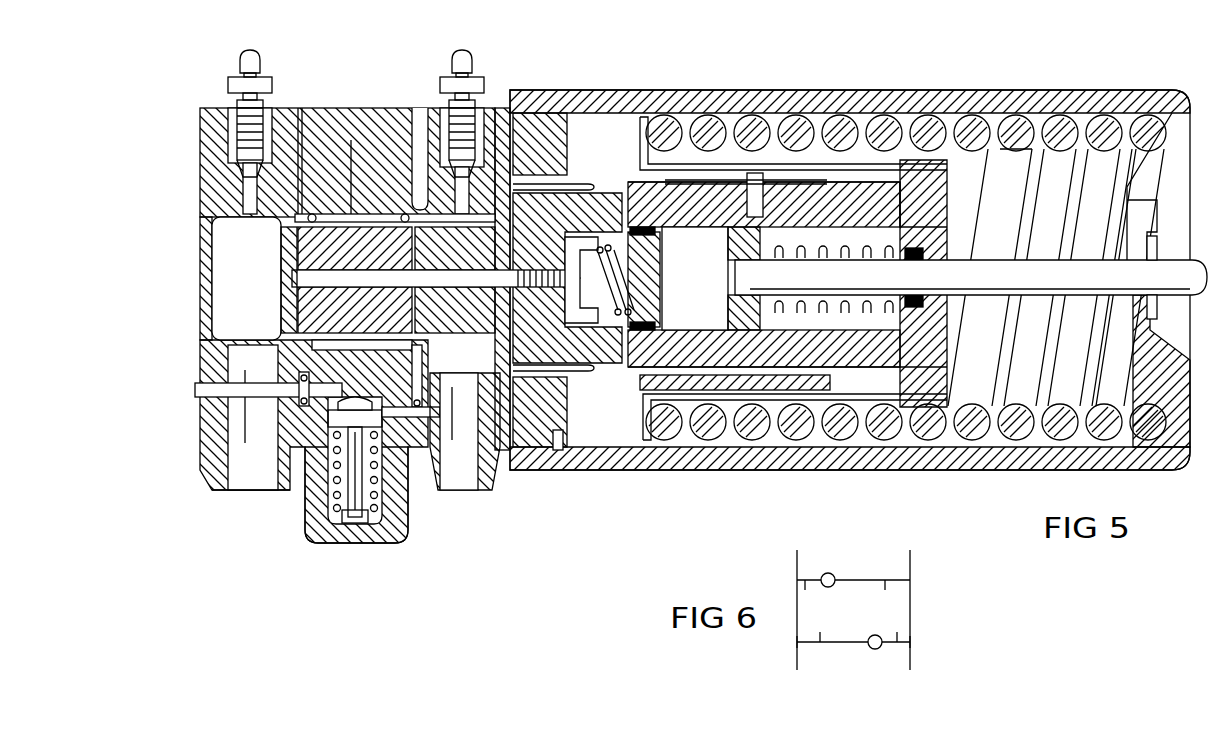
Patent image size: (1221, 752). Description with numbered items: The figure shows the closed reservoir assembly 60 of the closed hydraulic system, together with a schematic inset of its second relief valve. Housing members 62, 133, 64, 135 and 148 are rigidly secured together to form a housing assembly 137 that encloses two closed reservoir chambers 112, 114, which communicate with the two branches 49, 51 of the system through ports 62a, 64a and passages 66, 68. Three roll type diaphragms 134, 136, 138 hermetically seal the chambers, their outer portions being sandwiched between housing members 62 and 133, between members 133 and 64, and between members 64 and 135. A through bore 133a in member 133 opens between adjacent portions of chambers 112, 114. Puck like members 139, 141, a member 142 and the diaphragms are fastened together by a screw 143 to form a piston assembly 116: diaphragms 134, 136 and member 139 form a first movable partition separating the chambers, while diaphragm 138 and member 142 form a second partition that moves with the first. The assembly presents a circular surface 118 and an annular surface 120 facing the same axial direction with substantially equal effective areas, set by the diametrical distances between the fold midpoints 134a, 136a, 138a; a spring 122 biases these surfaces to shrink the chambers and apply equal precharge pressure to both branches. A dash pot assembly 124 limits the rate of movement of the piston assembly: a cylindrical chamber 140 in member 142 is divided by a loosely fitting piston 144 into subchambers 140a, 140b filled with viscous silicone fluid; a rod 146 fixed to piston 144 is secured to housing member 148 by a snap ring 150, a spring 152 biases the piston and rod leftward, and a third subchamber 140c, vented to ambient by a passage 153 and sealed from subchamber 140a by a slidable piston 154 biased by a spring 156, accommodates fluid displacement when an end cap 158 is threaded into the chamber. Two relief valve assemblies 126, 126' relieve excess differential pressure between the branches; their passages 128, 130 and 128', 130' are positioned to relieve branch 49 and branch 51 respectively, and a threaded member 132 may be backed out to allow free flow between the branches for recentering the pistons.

In FIG. 5, the closed reservoir assembly 60 is at (632, 70).
In FIG. 5, the housing member 62 is at (217, 130).
In FIG. 5, the port 62a is at (230, 490).
In FIG. 5, the housing member 64 is at (422, 108).
In FIG. 5, the port 64a is at (485, 490).
In FIG. 5, the conduit or passage 66 is at (258, 490).
In FIG. 5, the conduit or passage 68 is at (462, 490).
In FIG. 5, the closed reservoir chamber 112 is at (203, 193).
In FIG. 5, the closed reservoir chamber 114 is at (438, 77).
In FIG. 5, the piston assembly 116 is at (265, 304).
In FIG. 5, the circular surface 118 is at (280, 257).
In FIG. 5, the annular surface 120 is at (495, 346).
In FIG. 5, the spring 122 is at (967, 116).
In FIG. 5, the dash pot assembly 124 is at (888, 380).
In FIG. 5, the relief valve assembly 126 is at (341, 512).
In FIG. 6, the relief valve assembly 126 is at (872, 668).
In FIG. 6, the relief valve assembly 126' is at (838, 551).
In FIG. 5, the passage 128 is at (250, 389).
In FIG. 6, the passage 128 is at (819, 618).
In FIG. 6, the passage 128' is at (924, 552).
In FIG. 5, the passage 130 is at (417, 472).
In FIG. 6, the passage 130 is at (882, 610).
In FIG. 6, the passage 130' is at (779, 552).
In FIG. 5, the threaded member 132 is at (385, 543).
In FIG. 5, the housing member 133 is at (330, 112).
In FIG. 5, the through bore 133a is at (342, 338).
In FIG. 5, the roll type diaphragm 134 is at (298, 222).
In FIG. 5, the fold midpoint 134a is at (351, 140).
In FIG. 5, the housing member 135 is at (532, 110).
In FIG. 5, the roll type diaphragm 136 is at (418, 216).
In FIG. 5, the fold midpoint 136a is at (383, 212).
In FIG. 5, the housing assembly 137 is at (736, 74).
In FIG. 5, the roll type diaphragm 138 is at (527, 130).
In FIG. 5, the fold midpoint 138a is at (577, 153).
In FIG. 5, the puck like member 139 is at (306, 130).
In FIG. 5, the cylindrical chamber 140 is at (690, 245).
In FIG. 5, the subchamber 140a is at (700, 368).
In FIG. 5, the subchamber 140b is at (843, 368).
In FIG. 5, the third subchamber 140c is at (624, 232).
In FIG. 5, the puck like member 141 is at (490, 108).
In FIG. 5, the member 142 is at (782, 390).
In FIG. 5, the screw 143 is at (281, 322).
In FIG. 5, the loosely fitting piston 144 is at (735, 262).
In FIG. 5, the rod 146 is at (1182, 287).
In FIG. 5, the housing member 148 is at (1178, 106).
In FIG. 5, the snap ring 150 is at (1157, 250).
In FIG. 5, the spring 152 is at (852, 164).
In FIG. 5, the passage 153 is at (632, 345).
In FIG. 5, the slidable piston 154 is at (660, 284).
In FIG. 5, the spring 156 is at (630, 335).
In FIG. 5, the end cap 158 is at (948, 400).
In FIG. 6, the branch 49 is at (788, 643).
In FIG. 6, the branch 51 is at (922, 642).